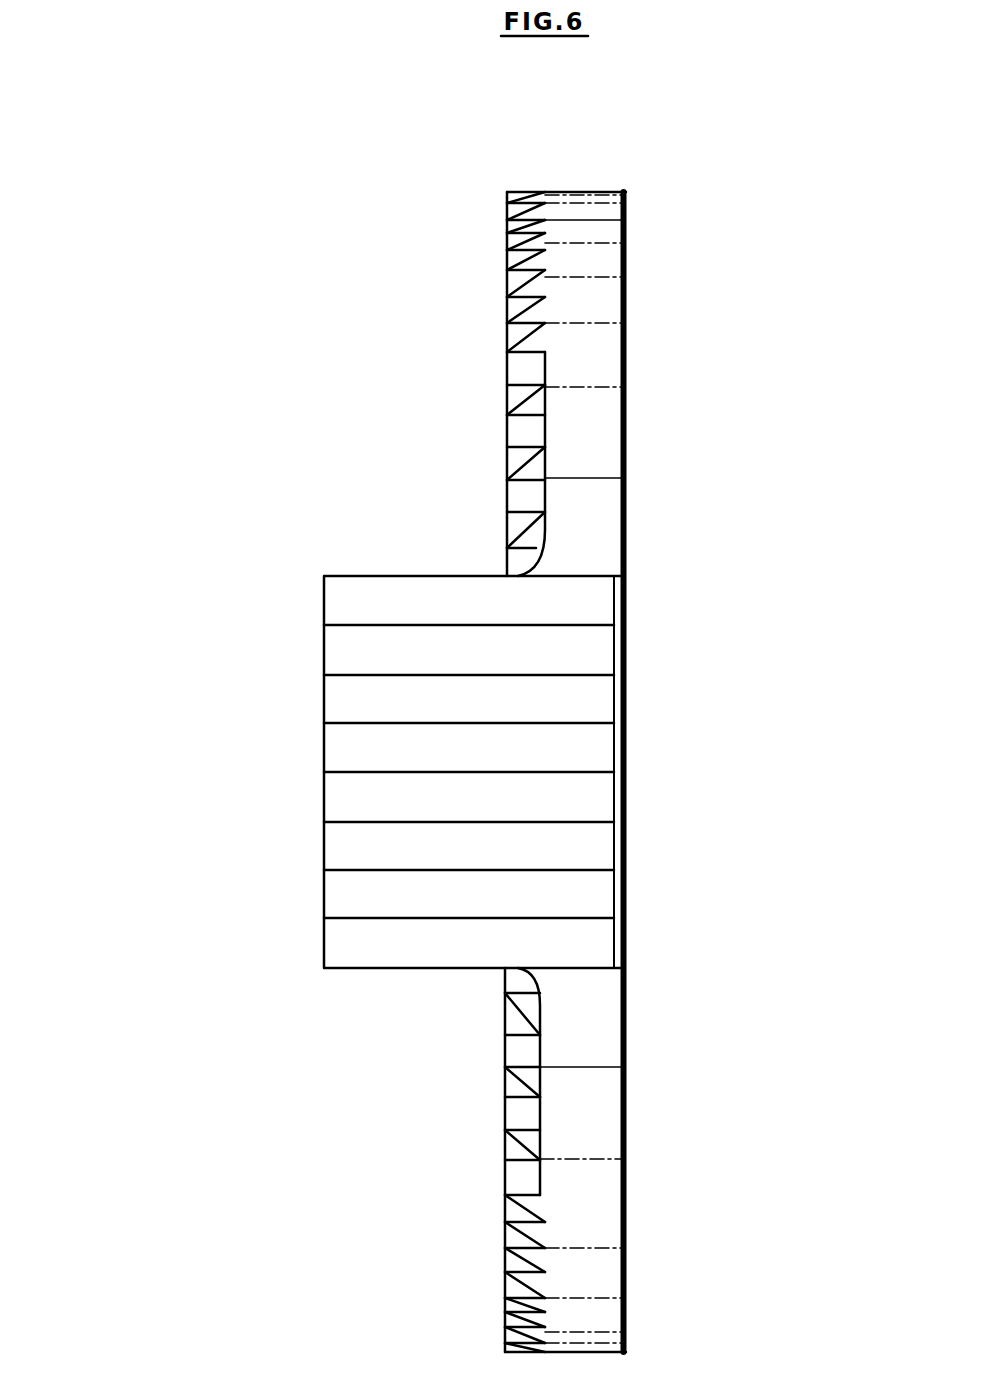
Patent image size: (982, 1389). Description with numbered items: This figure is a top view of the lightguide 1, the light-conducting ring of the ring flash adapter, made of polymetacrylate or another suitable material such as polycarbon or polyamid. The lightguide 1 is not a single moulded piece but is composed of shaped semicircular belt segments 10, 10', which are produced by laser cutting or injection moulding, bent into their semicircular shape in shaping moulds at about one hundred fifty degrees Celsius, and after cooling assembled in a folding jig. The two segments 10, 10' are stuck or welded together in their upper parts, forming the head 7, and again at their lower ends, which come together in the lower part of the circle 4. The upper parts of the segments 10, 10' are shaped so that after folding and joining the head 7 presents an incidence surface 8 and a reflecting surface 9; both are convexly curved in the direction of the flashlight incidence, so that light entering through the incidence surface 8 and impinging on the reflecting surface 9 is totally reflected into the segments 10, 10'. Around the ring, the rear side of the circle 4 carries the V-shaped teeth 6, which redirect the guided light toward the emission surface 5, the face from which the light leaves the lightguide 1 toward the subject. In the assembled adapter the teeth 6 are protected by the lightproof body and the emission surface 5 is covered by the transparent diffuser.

The lightguide 1 is at (340, 340).
The circle 4 is at (660, 370).
The emission surface 5 is at (628, 530).
The "V" shaped teeth 6 is at (515, 1236).
The head 7 is at (303, 990).
The incidence surface 8 is at (321, 790).
The reflecting surface 9 is at (412, 708).
The shaped semicircular belt segment 10 is at (371, 871).
The shaped semicircular belt segment 10' is at (354, 670).